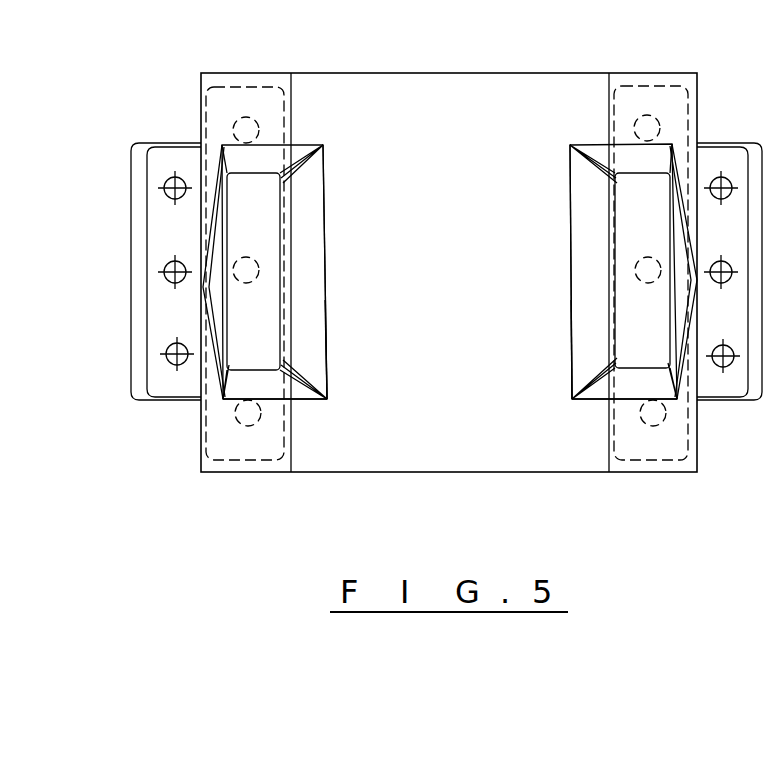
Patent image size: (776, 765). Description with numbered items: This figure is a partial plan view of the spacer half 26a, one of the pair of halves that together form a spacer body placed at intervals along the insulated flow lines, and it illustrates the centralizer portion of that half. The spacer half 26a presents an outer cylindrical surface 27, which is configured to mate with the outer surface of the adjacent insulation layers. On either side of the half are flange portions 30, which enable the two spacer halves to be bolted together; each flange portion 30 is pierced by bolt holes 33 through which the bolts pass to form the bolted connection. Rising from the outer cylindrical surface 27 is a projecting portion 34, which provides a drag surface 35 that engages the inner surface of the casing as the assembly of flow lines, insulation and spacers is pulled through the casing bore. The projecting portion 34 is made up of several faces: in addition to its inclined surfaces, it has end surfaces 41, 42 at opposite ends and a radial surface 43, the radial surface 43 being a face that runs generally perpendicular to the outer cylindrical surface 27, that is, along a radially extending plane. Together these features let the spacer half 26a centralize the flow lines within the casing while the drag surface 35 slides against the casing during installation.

The spacer half 26a is at (432, 216).
The outer cylindrical surface 27 is at (395, 437).
The flange portion 30 is at (170, 152).
The bolt holes 33 is at (158, 192).
The projecting portions 34 is at (327, 362).
The drag surface 35 is at (255, 217).
The end surface 41 is at (260, 157).
The end surface 42 is at (247, 383).
The radial surface 43 is at (303, 272).